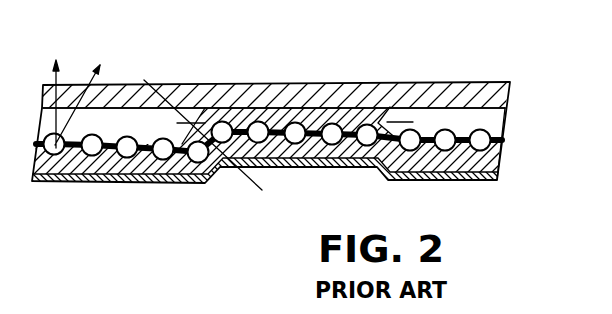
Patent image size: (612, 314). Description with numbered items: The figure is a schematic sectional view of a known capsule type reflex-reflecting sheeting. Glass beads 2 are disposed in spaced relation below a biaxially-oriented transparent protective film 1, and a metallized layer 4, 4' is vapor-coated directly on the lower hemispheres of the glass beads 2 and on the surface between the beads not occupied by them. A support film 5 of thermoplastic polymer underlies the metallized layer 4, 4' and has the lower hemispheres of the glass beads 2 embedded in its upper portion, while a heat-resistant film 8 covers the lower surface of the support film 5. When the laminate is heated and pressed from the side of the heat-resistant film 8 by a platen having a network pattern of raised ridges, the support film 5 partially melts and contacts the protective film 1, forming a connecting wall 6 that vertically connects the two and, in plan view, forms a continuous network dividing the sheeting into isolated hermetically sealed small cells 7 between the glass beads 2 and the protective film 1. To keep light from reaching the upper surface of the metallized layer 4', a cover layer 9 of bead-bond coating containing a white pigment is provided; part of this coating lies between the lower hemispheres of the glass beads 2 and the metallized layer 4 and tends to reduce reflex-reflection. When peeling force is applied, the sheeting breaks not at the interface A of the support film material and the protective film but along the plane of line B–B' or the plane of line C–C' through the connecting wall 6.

The transparent protective film 1 is at (500, 94).
The glass beads 2 is at (481, 140).
The metallized layer 4 is at (285, 162).
The metallized layer 4' is at (317, 92).
The support film 5 is at (497, 163).
The connecting wall 6 is at (370, 96).
The hermetically sealed small cells 7 is at (126, 126).
The heat-resistant film 8 is at (481, 180).
The cover layer 9 is at (34, 145).
The interface A is at (260, 108).
The line B–B' B is at (298, 122).
The line C–C' C is at (207, 135).